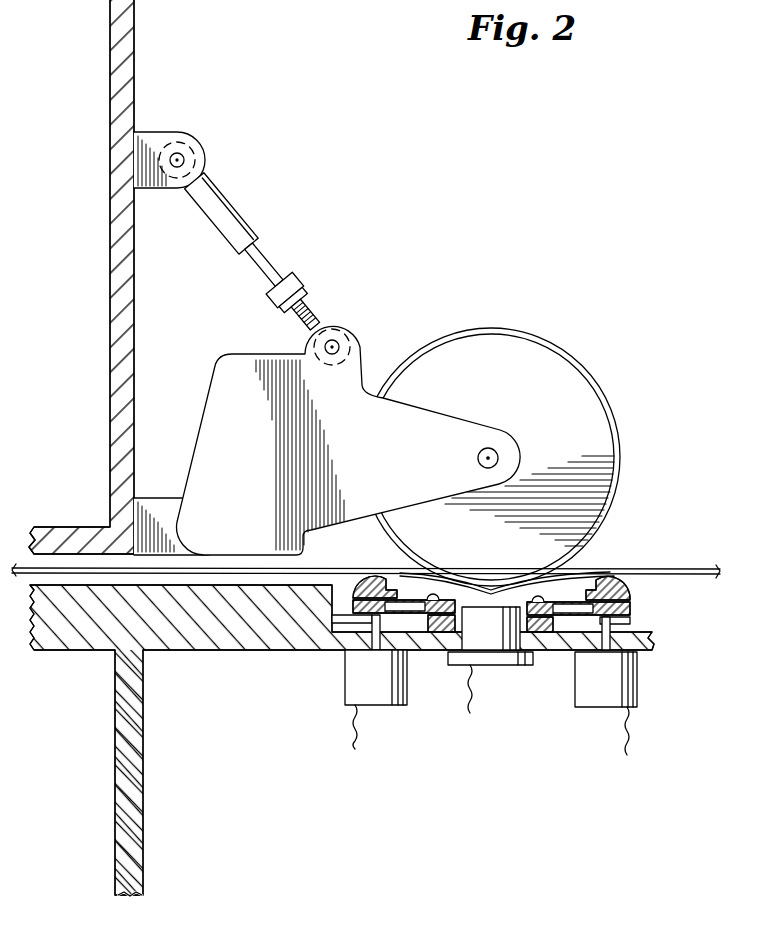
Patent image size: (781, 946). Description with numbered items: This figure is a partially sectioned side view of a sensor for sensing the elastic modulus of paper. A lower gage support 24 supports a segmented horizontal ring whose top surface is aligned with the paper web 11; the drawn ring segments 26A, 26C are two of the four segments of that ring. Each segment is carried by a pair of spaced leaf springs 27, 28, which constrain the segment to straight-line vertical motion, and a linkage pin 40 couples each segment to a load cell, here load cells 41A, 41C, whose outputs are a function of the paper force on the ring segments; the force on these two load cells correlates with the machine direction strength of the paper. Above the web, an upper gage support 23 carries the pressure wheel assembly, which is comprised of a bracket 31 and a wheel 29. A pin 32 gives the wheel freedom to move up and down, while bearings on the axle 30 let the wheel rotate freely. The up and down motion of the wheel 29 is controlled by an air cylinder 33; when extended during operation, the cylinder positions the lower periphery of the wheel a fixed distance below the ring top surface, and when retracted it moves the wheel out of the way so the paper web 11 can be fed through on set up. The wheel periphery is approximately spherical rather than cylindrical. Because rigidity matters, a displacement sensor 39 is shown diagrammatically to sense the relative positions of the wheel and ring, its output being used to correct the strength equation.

The paper web 11 is at (270, 566).
The upper gage support 23 is at (110, 50).
The lower gage support 24 is at (134, 748).
The ring segment 26A is at (628, 582).
The ring segment 26C is at (388, 577).
The leaf spring 27 is at (415, 605).
The leaf spring 28 is at (410, 650).
The wheel 29 is at (573, 358).
The axle 30 is at (496, 452).
The bracket 31 is at (207, 385).
The pin 32 is at (205, 499).
The air cylinder 33 is at (233, 200).
The displacement sensor 39 is at (500, 640).
The linkage pin 40 is at (372, 621).
The load cell 41A is at (642, 682).
The load cell 41C is at (358, 687).